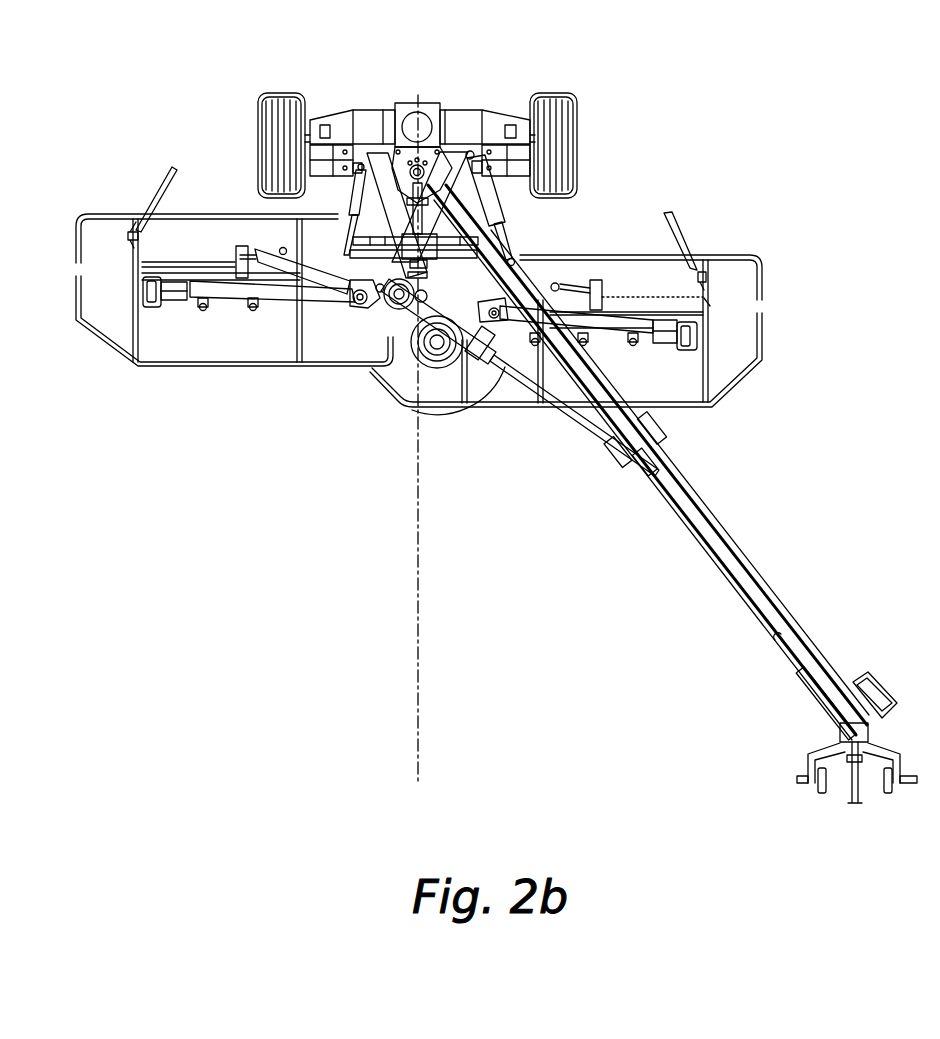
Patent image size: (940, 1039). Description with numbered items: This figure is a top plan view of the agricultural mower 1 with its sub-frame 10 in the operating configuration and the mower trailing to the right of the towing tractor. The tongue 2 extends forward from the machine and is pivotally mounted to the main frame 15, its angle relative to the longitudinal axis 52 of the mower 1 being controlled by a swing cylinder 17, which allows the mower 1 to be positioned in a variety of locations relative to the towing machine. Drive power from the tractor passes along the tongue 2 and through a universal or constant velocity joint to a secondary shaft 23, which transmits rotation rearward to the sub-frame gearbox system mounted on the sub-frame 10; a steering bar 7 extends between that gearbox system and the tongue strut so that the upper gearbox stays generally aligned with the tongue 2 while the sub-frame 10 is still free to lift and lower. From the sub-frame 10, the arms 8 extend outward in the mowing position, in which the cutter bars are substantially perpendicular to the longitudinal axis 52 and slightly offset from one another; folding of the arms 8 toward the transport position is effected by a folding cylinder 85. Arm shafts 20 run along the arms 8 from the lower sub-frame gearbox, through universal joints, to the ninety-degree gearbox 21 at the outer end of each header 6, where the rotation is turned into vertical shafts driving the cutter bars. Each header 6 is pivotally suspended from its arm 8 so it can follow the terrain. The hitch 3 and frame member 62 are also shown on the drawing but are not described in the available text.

The agricultural mower 1 is at (797, 168).
The tongue 2 is at (752, 565).
The hitch 3 is at (812, 745).
The header 6 is at (207, 263).
The steering bar 7 is at (587, 423).
The arm 8 is at (264, 262).
The sub-frame 10 is at (389, 132).
The main frame 15 is at (458, 116).
The swing cylinder 17 is at (493, 205).
The arm shaft 20 is at (233, 296).
The 90° gearbox 21 is at (152, 310).
The secondary shaft 23 is at (457, 410).
The longitudinal axis 52 is at (420, 643).
The frame member 62 is at (352, 111).
The folding cylinder 85 is at (305, 212).